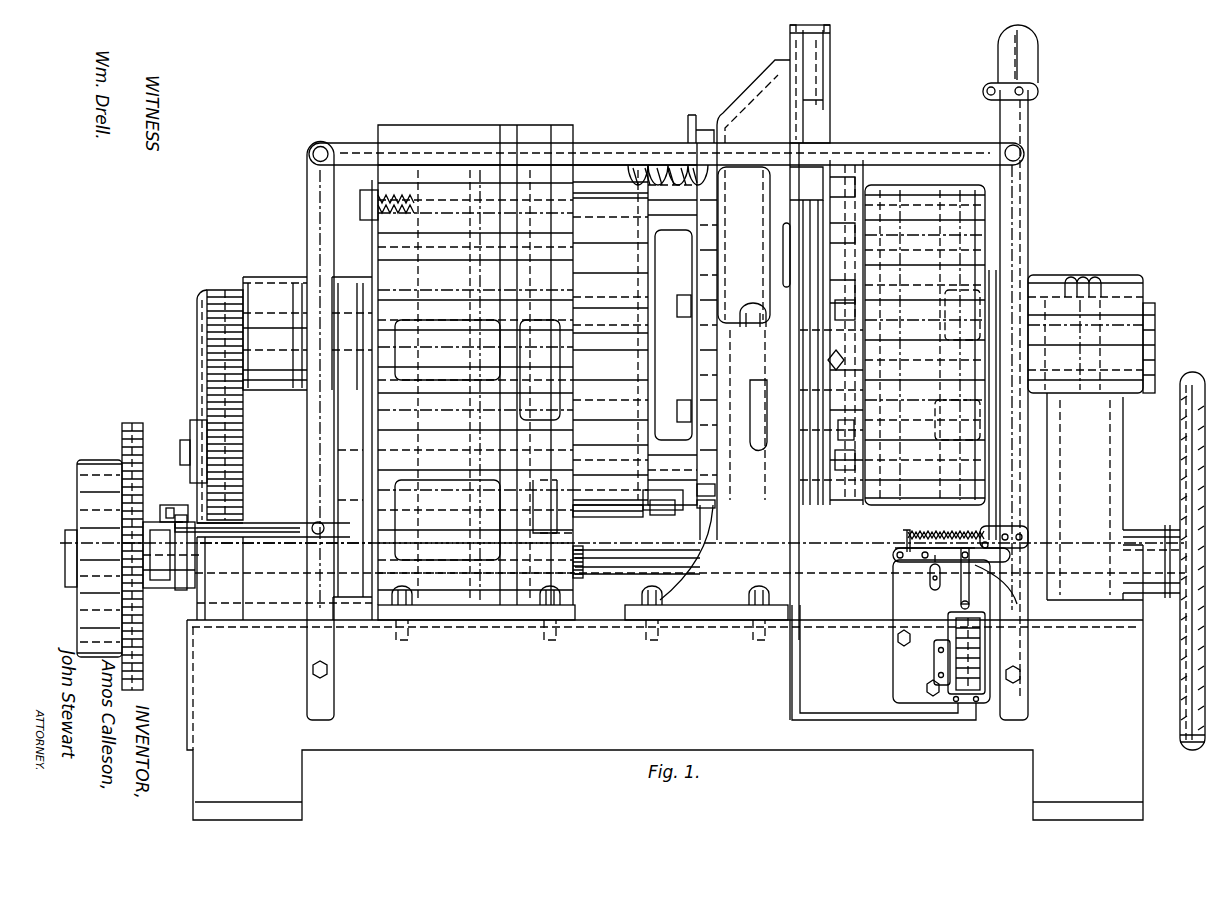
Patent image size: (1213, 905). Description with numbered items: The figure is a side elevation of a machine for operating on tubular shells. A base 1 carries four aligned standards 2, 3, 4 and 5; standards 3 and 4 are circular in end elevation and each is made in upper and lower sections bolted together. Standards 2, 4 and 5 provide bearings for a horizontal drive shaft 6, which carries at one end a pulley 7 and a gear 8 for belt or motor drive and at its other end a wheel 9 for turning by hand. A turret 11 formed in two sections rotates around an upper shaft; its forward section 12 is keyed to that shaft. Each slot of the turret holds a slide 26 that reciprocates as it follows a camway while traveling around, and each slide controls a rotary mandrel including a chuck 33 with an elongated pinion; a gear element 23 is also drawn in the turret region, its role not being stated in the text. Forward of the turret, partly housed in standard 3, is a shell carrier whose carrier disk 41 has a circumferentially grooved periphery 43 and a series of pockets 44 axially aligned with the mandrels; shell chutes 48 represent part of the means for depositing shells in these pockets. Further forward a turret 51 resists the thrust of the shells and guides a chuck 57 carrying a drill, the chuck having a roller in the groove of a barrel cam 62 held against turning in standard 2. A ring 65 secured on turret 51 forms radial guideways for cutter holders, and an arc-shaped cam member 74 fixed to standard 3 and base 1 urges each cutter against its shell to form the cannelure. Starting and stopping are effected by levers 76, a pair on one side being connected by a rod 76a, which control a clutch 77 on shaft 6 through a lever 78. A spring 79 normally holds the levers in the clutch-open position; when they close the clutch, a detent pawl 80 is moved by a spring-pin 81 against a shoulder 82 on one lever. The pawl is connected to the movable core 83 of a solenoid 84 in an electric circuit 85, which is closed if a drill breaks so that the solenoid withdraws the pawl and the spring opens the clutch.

The base 1 is at (583, 745).
The standard 2 is at (1118, 513).
The standard 3 is at (775, 417).
The standard 4 is at (565, 530).
The standard 5 is at (372, 519).
The drive shaft 6 is at (612, 573).
The pulley 7 is at (92, 462).
The gear 8 is at (137, 425).
The wheel 9 is at (1185, 661).
The turret 11 is at (608, 521).
The forward turret section 12 is at (660, 510).
The gear 23 is at (288, 448).
The slide 26 is at (375, 222).
The chuck 33 is at (704, 508).
The carrier disk 41 is at (832, 336).
The circumferential groove 43 is at (818, 289).
The pockets 44 is at (822, 272).
The shell chutes 48 is at (830, 90).
The turret 51 is at (904, 538).
The chuck 57 is at (998, 482).
The barrel cam 62 is at (995, 242).
The ring 65 is at (856, 423).
The arc-shaped cam member 74 is at (856, 460).
The levers 76 is at (310, 241).
The rod 76a is at (612, 150).
The clutch 77 is at (172, 595).
The lever 78 is at (167, 508).
The spring 79 is at (946, 524).
The detent pawl 80 is at (1022, 608).
The spring-pin 81 is at (928, 572).
The shoulder 82 is at (1018, 548).
The movable core 83 is at (958, 610).
The solenoid 84 is at (953, 665).
The electric circuit 85 is at (836, 720).